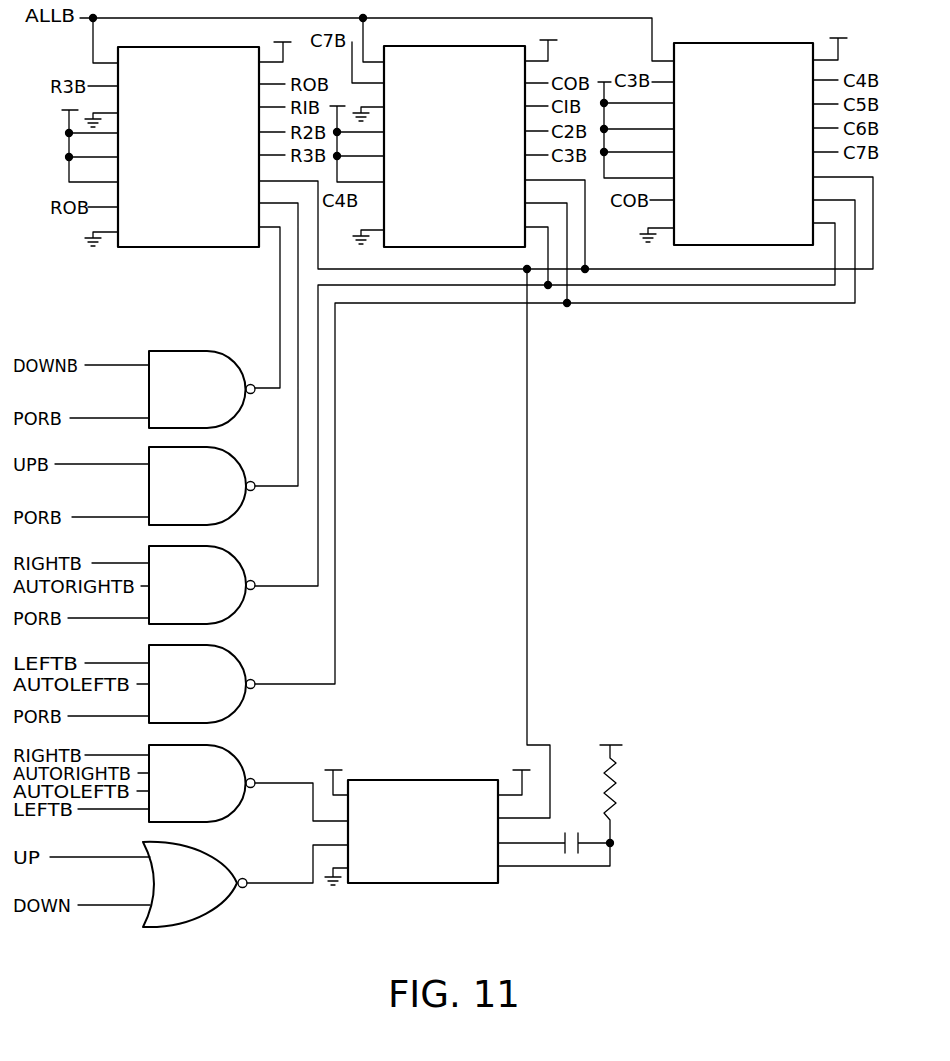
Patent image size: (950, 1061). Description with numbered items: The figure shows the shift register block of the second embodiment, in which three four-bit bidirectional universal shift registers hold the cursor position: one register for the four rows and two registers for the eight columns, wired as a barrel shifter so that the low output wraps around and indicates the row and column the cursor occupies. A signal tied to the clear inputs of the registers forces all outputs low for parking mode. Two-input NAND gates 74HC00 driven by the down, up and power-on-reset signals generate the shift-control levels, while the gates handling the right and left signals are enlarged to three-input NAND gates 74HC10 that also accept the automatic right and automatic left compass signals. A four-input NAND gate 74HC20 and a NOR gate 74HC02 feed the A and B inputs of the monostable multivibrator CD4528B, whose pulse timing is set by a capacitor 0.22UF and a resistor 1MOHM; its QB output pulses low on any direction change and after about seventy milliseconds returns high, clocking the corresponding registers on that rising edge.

The monostable multivibrator CD4528B is at (427, 827).
The 2-input NAND gate 74HC00 is at (202, 438).
The 3-input NAND gate 74HC10 is at (202, 634).
The 4-input NAND gate 74HC20 is at (202, 783).
The 2-input NOR gate 74HC02 is at (195, 884).
The timing capacitor 0.22UF is at (555, 835).
The timing resistor 1MOHM is at (643, 796).